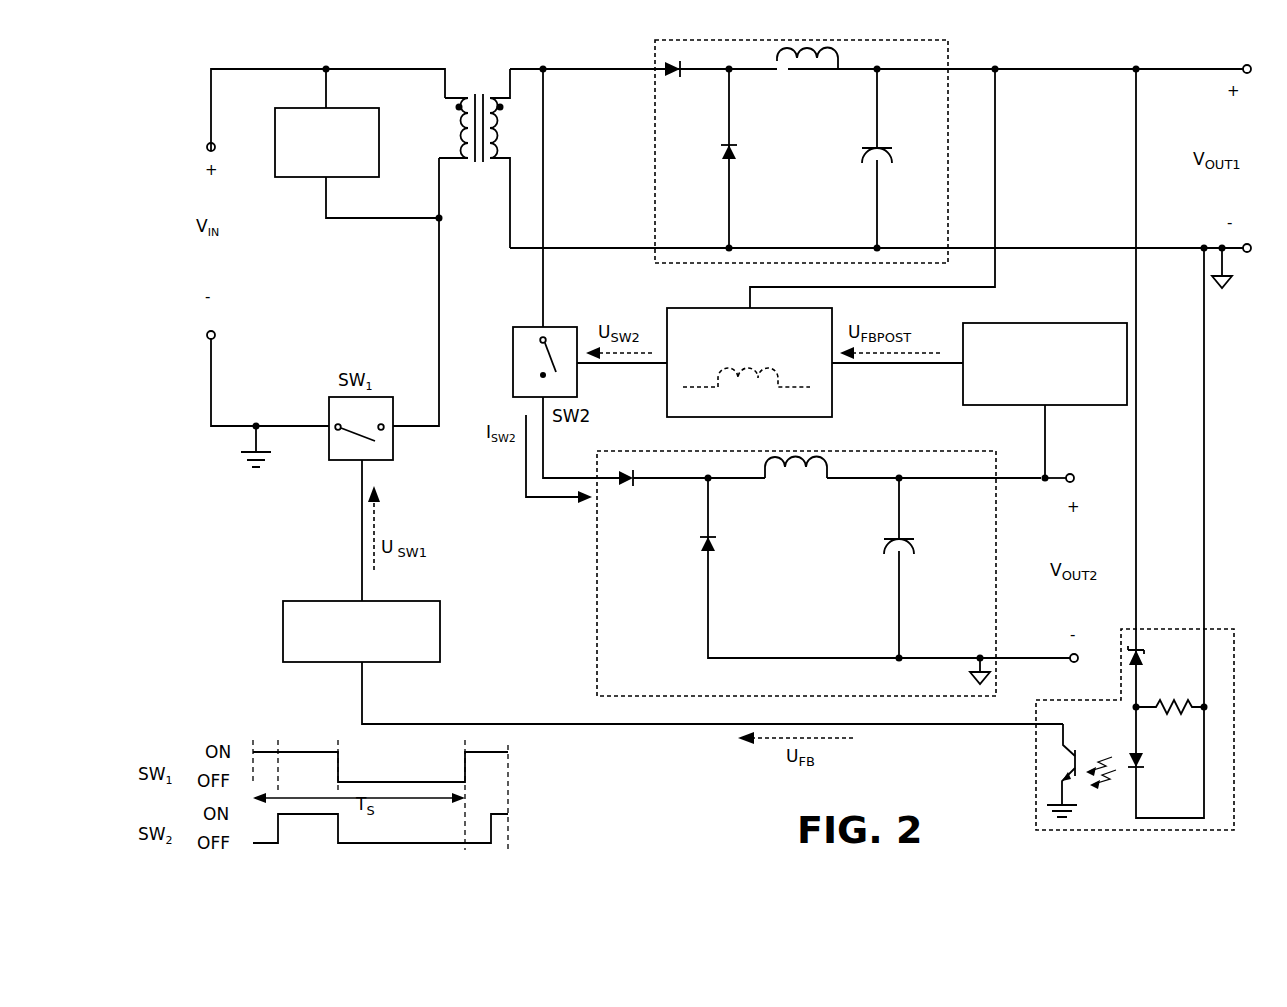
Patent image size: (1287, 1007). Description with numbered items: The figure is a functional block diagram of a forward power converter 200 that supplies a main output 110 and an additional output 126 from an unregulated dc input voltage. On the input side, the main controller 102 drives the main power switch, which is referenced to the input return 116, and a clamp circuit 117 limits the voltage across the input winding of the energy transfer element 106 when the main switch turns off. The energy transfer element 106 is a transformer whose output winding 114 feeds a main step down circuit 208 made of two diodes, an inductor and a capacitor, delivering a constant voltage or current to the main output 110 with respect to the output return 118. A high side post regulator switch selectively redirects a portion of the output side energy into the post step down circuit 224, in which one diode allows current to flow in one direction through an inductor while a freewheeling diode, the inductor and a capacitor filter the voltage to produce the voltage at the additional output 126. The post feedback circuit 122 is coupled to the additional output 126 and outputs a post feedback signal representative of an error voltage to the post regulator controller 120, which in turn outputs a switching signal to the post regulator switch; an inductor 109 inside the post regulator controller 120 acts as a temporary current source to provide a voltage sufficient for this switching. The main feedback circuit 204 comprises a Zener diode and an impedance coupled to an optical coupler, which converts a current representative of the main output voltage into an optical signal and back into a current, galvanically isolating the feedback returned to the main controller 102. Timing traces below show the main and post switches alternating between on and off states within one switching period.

The main controller 102 is at (274, 592).
The energy transfer element 106 is at (492, 158).
The inductor 109 is at (748, 390).
The main output 110 is at (1224, 82).
The output winding 114 is at (502, 140).
The input return 116 is at (260, 474).
The clamp circuit 117 is at (281, 180).
The output return 118 is at (1218, 293).
The post regulator controller 120 is at (662, 408).
The post feedback circuit 122 is at (960, 394).
The additional output 126 is at (1082, 470).
The power converter 200 is at (641, 58).
The main feedback circuit 204 is at (1034, 776).
The first output 208 is at (648, 262).
The post step down circuit 224 is at (600, 590).